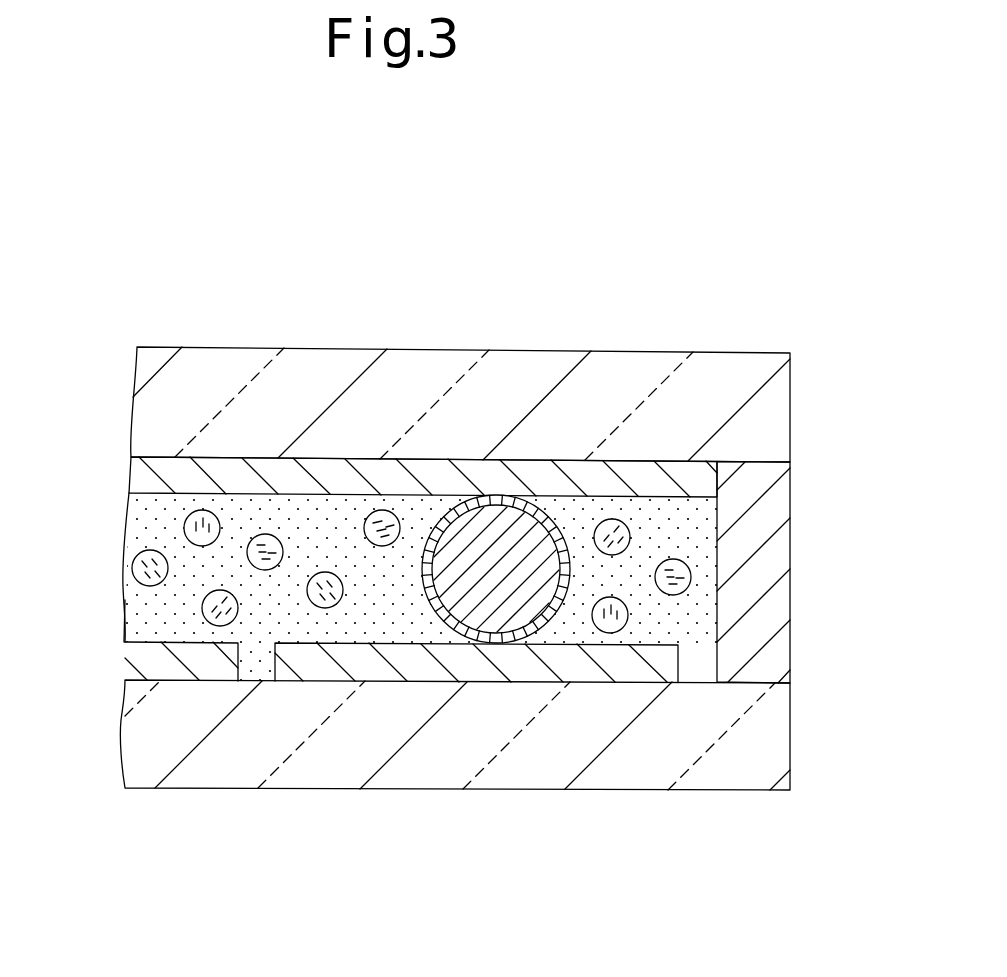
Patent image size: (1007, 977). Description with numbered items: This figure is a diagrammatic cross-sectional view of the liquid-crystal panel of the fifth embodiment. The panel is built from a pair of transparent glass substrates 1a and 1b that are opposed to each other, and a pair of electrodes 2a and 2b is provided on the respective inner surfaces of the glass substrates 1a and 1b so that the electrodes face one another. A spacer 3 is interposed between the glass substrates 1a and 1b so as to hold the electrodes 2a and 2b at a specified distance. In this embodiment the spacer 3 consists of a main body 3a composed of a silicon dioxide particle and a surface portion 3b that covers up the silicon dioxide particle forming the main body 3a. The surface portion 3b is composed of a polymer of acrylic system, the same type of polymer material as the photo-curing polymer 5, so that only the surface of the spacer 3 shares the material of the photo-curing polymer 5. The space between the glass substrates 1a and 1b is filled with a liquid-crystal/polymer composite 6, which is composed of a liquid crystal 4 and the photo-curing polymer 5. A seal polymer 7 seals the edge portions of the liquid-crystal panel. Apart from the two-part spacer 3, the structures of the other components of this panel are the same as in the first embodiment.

The transparent glass substrate 1a is at (790, 402).
The transparent glass substrate 1b is at (788, 735).
The electrode 2a is at (540, 478).
The electrode 2b is at (585, 683).
The spacer 3 is at (458, 388).
The main body 3a is at (513, 520).
The surface portion 3b is at (495, 497).
The liquid crystal 4 is at (267, 532).
The photo-curing polymer 5 is at (127, 625).
The liquid-crystal/polymer composite 6 is at (127, 523).
The seal polymer 7 is at (790, 587).